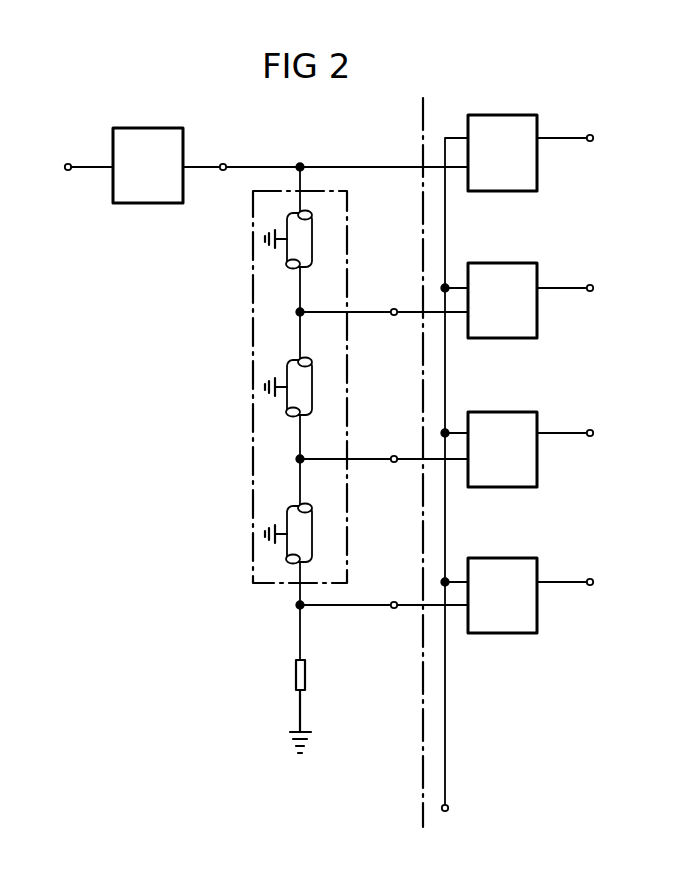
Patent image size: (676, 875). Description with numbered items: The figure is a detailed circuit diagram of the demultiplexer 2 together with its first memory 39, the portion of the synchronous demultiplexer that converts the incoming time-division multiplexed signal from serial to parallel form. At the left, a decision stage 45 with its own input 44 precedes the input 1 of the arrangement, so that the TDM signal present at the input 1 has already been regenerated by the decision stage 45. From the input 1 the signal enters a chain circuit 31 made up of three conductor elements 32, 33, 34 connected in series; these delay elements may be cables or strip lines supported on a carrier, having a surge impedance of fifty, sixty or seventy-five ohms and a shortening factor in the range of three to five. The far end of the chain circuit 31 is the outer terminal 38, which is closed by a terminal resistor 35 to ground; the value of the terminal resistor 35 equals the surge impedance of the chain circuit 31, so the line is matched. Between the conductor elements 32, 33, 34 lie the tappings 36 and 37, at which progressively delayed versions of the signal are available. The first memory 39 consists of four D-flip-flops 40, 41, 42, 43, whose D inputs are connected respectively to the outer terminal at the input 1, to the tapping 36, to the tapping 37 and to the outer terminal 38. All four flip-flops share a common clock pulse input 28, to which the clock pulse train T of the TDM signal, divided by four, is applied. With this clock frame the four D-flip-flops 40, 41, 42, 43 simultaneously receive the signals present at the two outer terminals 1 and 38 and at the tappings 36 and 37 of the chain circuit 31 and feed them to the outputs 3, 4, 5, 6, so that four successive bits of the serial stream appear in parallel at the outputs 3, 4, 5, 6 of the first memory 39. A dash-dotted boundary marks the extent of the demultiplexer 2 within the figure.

The input 1 is at (325, 153).
The demultiplexer 2 is at (432, 89).
The output 3 is at (573, 139).
The output 4 is at (573, 289).
The output 5 is at (573, 434).
The output 6 is at (573, 583).
The common clock pulse input 28 is at (459, 492).
The chain circuit 31 is at (253, 328).
The conductor element 32 is at (303, 240).
The conductor element 33 is at (303, 387).
The conductor element 34 is at (303, 534).
The terminal resistor 35 is at (240, 641).
The tapping 36 is at (382, 300).
The tapping 37 is at (382, 445).
The outer terminal 38 is at (382, 591).
The first memory 39 is at (537, 354).
The D-flip-flop 40 is at (503, 140).
The D-flip-flop 41 is at (503, 288).
The D-flip-flop 42 is at (503, 437).
The D-flip-flop 43 is at (503, 583).
The input 44 is at (74, 170).
The decision stage 45 is at (153, 252).